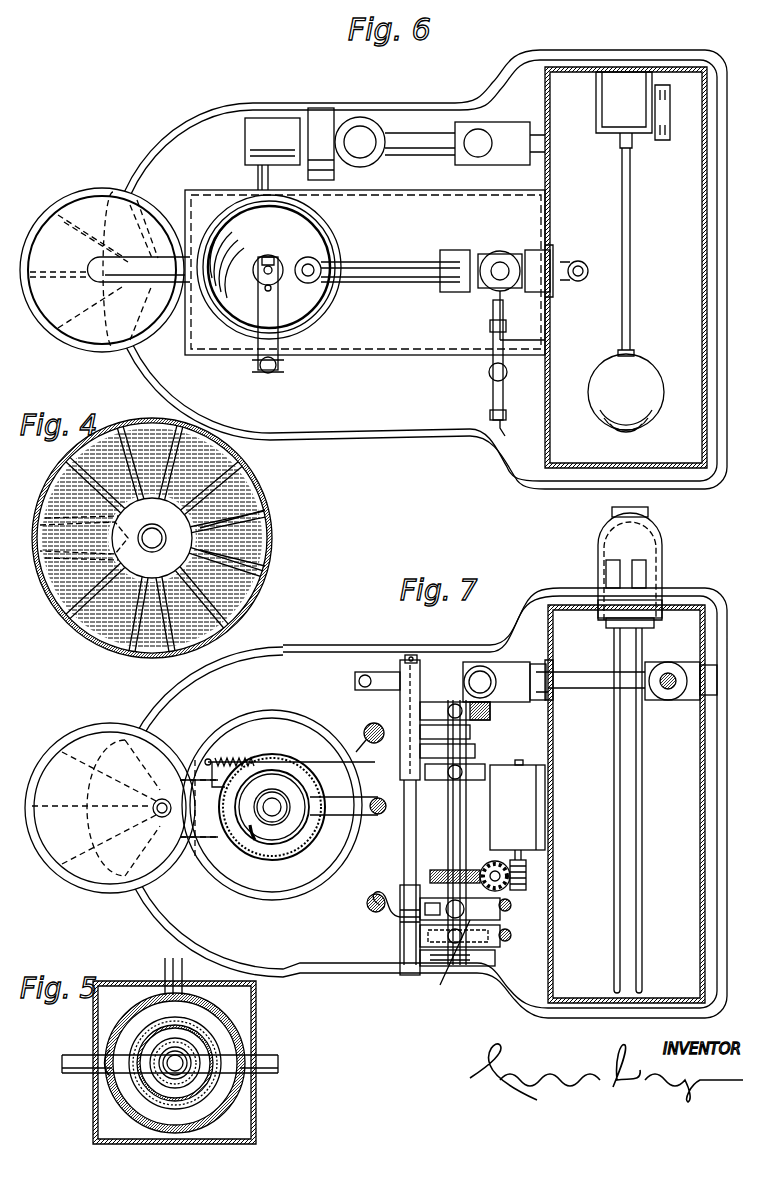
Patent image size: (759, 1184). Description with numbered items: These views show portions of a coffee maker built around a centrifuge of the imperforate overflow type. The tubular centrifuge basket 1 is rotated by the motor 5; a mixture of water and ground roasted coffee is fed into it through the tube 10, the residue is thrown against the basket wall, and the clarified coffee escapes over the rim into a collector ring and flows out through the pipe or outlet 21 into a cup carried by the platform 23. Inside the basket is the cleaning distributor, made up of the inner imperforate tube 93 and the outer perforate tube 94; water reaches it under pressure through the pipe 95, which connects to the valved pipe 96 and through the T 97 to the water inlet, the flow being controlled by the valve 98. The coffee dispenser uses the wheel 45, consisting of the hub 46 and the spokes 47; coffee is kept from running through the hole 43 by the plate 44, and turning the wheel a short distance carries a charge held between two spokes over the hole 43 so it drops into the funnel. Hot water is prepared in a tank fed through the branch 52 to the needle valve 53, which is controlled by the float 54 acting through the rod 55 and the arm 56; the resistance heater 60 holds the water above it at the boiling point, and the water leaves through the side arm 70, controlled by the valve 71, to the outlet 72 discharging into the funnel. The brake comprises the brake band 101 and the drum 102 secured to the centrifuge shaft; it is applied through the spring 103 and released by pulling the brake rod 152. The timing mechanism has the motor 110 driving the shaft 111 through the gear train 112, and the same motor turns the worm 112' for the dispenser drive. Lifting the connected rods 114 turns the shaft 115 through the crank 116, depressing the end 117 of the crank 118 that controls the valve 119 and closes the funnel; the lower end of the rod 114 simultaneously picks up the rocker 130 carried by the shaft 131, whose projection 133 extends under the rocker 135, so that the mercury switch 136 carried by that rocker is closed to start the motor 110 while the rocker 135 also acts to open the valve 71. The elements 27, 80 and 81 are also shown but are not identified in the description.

In FIG. 5, the centrifuge basket 1 is at (222, 1085).
In FIG. 7, the motor 5 is at (210, 893).
In FIG. 5, the tube 10 is at (188, 1045).
In FIG. 6, the pipe or outlet 21 is at (95, 278).
In FIG. 5, the pipe or outlet 21 is at (70, 1052).
In FIG. 7, the platform 23 is at (60, 878).
In FIG. 6, the pulley wheel 27 is at (62, 344).
In FIG. 4, the hole 43 is at (75, 555).
In FIG. 4, the plate 44 is at (120, 535).
In FIG. 4, the wheel 45 is at (235, 497).
In FIG. 4, the hub 46 is at (152, 538).
In FIG. 4, the spokes 47 is at (225, 565).
In FIG. 7, the branch 52 is at (545, 702).
In FIG. 7, the needle valve 53 is at (660, 700).
In FIG. 6, the float 54 is at (626, 391).
In FIG. 6, the rod 55 is at (636, 248).
In FIG. 6, the arm 56 is at (670, 140).
In FIG. 7, the resistance heater 60 is at (655, 600).
In FIG. 6, the side arm 70 is at (392, 262).
In FIG. 6, the valve 71 is at (500, 250).
In FIG. 6, the outlet 72 is at (315, 265).
In FIG. 5, the ring 80 is at (137, 1085).
In FIG. 5, the outer ring 81 is at (225, 1105).
In FIG. 5, the inner imperforate tube 93 is at (195, 1050).
In FIG. 5, the outer perforate tube 94 is at (200, 1058).
In FIG. 6, the pipe 95 is at (255, 173).
In FIG. 5, the pipe 95 is at (165, 972).
In FIG. 6, the valved pipe 96 is at (410, 132).
In FIG. 6, the T 97 is at (512, 122).
In FIG. 7, the T 97 is at (510, 662).
In FIG. 6, the valve 98 is at (372, 118).
In FIG. 7, the brake band 101 is at (292, 843).
In FIG. 7, the drum 102 is at (258, 830).
In FIG. 7, the spring 103 is at (232, 758).
In FIG. 7, the motor 110 is at (517, 805).
In FIG. 7, the shaft 111 is at (450, 830).
In FIG. 7, the gear train 112 is at (555, 844).
In FIG. 7, the worm 112' is at (517, 876).
In FIG. 6, the rods 114 is at (517, 434).
In FIG. 7, the rods 114 is at (512, 937).
In FIG. 6, the shaft 115 is at (360, 355).
In FIG. 6, the crank 116 is at (493, 397).
In FIG. 6, the end 117 is at (262, 276).
In FIG. 6, the crank 118 is at (275, 318).
In FIG. 6, the valve 119 is at (266, 254).
In FIG. 7, the rocker 130 is at (500, 965).
In FIG. 7, the shaft 131 is at (406, 858).
In FIG. 7, the projection 133 is at (510, 912).
In FIG. 7, the rocker 135 is at (398, 925).
In FIG. 7, the mercury switch 136 is at (455, 975).
In FIG. 7, the brake rod 152 is at (365, 728).